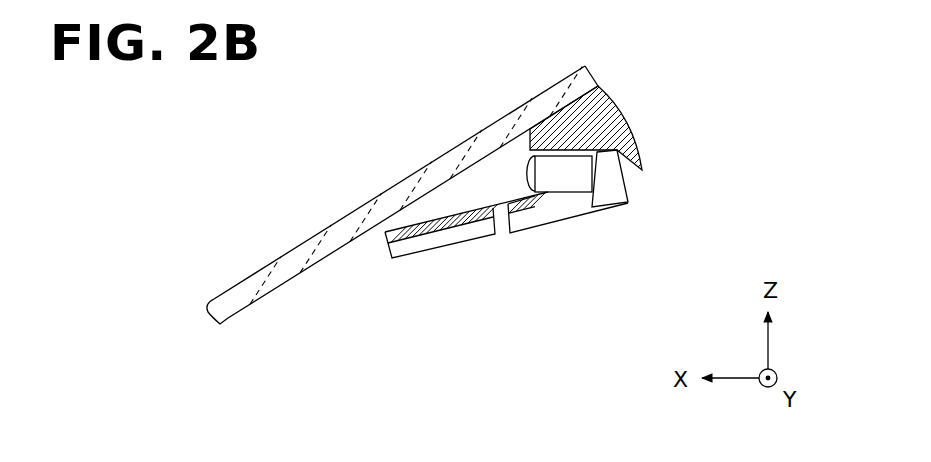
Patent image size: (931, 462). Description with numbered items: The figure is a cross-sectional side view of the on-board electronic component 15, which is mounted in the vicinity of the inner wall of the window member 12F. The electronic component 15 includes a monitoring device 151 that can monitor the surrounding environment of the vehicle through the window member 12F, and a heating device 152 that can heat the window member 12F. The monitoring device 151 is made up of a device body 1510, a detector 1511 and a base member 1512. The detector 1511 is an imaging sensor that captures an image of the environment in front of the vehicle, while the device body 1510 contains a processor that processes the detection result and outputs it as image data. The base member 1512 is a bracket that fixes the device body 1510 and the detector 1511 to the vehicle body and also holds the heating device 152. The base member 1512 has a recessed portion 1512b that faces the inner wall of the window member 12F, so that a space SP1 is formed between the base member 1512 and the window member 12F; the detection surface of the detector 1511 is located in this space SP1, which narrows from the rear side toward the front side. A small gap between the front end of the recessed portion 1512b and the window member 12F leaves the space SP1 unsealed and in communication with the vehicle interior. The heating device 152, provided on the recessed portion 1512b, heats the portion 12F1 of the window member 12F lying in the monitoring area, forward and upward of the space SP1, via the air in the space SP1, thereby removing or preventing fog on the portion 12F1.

The window member 12F is at (383, 195).
The portion of the window member 12F1 is at (397, 179).
The electronic component 15 is at (601, 237).
The monitoring device 151 is at (601, 137).
The device body 1510 is at (627, 190).
The detector 1511 is at (532, 158).
The base member 1512 is at (628, 118).
The recessed portion 1512b is at (462, 213).
The heating device 152 is at (443, 256).
The space SP1 is at (502, 183).